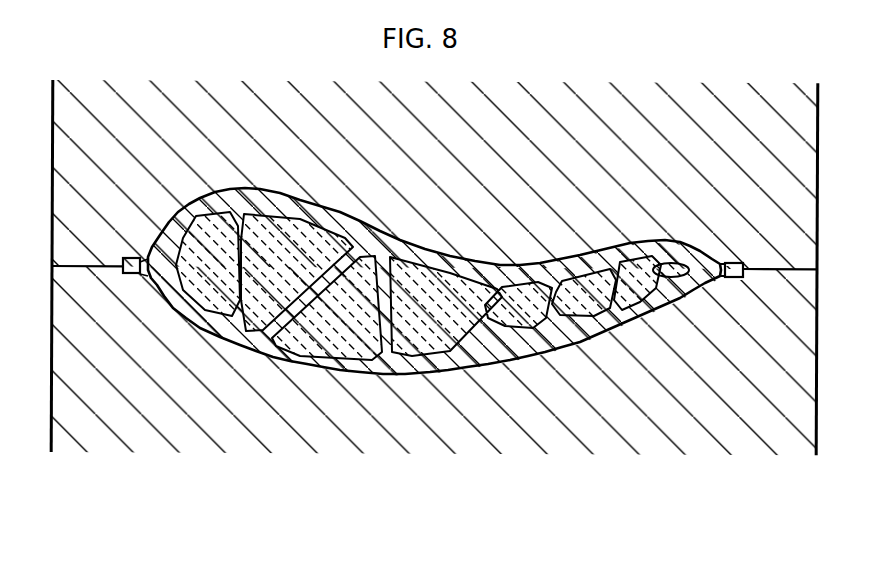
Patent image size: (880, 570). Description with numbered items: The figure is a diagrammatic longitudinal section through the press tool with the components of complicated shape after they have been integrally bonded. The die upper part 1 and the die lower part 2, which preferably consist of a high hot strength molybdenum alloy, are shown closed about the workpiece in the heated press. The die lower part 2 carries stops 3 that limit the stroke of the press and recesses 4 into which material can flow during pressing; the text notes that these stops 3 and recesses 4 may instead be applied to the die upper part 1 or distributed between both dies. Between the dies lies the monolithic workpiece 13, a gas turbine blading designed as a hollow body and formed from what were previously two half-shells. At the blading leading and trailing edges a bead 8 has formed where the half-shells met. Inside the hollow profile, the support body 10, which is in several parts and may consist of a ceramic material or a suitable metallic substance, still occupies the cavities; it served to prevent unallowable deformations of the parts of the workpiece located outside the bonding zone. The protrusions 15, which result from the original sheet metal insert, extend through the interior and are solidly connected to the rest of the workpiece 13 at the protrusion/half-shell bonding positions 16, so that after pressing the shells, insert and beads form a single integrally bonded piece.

The die upper part 1 is at (563, 153).
The die lower part 2 is at (450, 420).
The stops 3 is at (91, 264).
The recesses 4 is at (131, 258).
The bead 8 is at (722, 262).
The support body 10 is at (347, 293).
The workpiece 13 is at (500, 353).
The protrusions 15 is at (330, 200).
The protrusion/half-shell bonding positions 16 is at (243, 327).